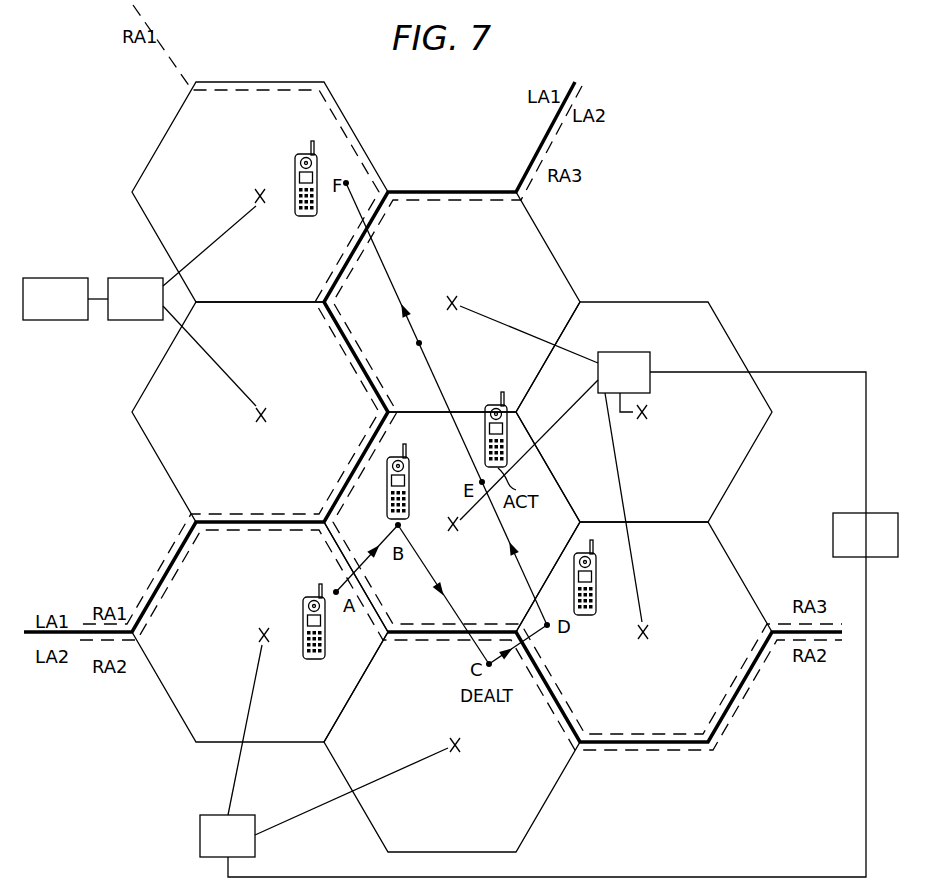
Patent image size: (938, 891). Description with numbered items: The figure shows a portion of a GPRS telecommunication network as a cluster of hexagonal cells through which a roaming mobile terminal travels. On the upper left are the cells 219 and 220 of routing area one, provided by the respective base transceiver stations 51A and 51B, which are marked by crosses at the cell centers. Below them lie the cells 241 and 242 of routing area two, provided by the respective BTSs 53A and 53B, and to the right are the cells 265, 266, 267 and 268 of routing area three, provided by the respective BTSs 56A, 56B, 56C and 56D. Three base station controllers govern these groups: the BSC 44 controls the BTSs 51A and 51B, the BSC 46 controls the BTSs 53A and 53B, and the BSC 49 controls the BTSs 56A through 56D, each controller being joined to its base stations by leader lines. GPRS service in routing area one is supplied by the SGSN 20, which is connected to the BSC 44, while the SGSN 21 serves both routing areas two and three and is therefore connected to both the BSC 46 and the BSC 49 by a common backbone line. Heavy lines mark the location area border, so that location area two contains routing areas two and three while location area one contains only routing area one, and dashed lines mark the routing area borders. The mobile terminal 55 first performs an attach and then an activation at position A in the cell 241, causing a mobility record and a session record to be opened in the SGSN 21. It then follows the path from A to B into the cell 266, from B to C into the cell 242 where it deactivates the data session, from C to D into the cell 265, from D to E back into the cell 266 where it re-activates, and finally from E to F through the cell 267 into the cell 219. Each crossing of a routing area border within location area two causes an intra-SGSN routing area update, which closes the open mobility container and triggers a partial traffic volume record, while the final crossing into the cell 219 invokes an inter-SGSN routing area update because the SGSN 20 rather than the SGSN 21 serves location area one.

The SGSN 20 is at (55, 278).
The SGSN 21 is at (833, 535).
The BSC 44 is at (134, 278).
The BSC 46 is at (200, 837).
The BSC 49 is at (650, 362).
The BTS 51A is at (258, 188).
The BTS 51B is at (262, 405).
The BTS 53A is at (262, 624).
The BTS 53B is at (457, 755).
The MT 55 is at (313, 661).
The BTS 56A is at (643, 642).
The BTS 56B is at (452, 512).
The BTS 56C is at (450, 292).
The BTS 56D is at (642, 422).
The cell 219 is at (278, 272).
The cell 220 is at (281, 491).
The cell 241 is at (240, 689).
The cell 242 is at (415, 730).
The cell 265 is at (726, 636).
The cell 266 is at (500, 595).
The cell 267 is at (500, 380).
The cell 268 is at (723, 426).